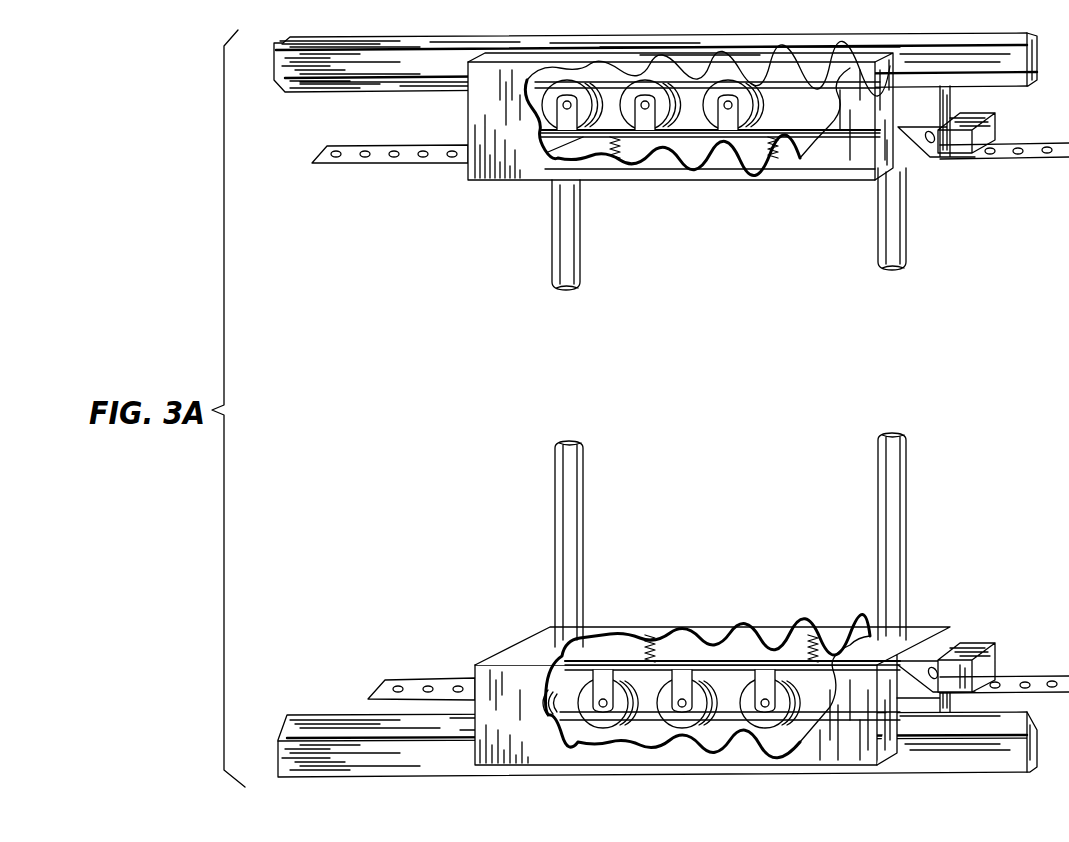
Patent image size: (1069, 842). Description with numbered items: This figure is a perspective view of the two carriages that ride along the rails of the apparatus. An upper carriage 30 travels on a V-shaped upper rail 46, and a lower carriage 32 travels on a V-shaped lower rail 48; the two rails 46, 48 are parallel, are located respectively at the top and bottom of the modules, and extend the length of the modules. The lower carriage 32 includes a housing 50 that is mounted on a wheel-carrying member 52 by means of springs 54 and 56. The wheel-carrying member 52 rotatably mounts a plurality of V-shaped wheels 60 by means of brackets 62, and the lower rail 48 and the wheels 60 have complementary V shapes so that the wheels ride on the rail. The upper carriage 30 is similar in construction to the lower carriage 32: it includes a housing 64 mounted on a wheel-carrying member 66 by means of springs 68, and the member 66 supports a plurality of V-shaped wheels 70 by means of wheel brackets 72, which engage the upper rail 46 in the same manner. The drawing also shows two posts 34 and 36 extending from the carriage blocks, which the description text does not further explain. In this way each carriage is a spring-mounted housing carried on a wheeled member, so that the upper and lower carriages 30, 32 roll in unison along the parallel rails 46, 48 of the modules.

The upper carriage 30 is at (606, 175).
The lower carriage 32 is at (703, 628).
The guide post 34 is at (880, 257).
The guide post 36 is at (580, 272).
The upper rail 46 is at (353, 67).
The lower rail 48 is at (347, 732).
The housing 50 is at (527, 655).
The wheel-carrying member 52 is at (760, 652).
The spring 54 is at (648, 652).
The spring 56 is at (848, 655).
The V-shaped wheels 60 is at (702, 695).
The brackets 62 is at (682, 680).
The housing 64 is at (522, 160).
The wheel-carrying member 66 is at (568, 160).
The springs 68 is at (625, 145).
The V-shaped wheels 70 is at (752, 125).
The wheel brackets 72 is at (650, 127).